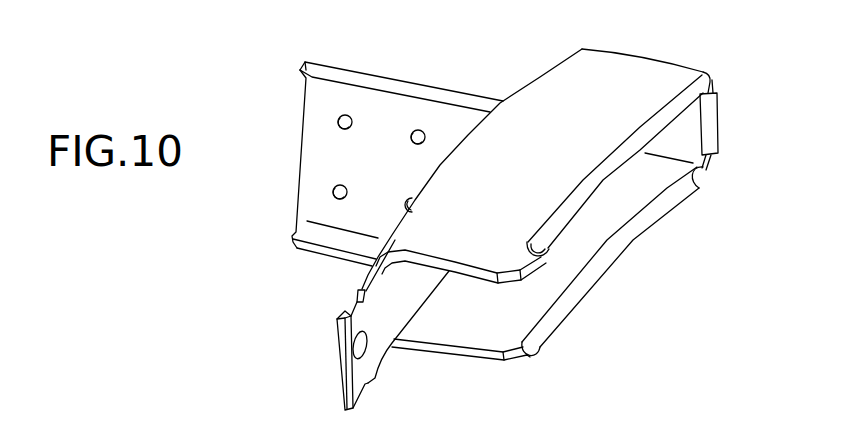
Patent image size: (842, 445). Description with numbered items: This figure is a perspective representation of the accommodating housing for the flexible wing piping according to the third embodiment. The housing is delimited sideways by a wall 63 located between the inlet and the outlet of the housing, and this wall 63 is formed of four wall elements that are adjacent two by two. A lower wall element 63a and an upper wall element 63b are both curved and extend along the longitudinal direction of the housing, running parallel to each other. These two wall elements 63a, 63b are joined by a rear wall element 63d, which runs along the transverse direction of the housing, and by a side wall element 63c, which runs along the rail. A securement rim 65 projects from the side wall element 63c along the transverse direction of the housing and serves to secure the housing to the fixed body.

The wall 63 is at (482, 208).
The lower wall element 63a is at (588, 85).
The upper wall element 63b is at (573, 255).
The side wall element 63c is at (338, 378).
The rear wall element 63d is at (683, 133).
The rim 65 is at (382, 127).